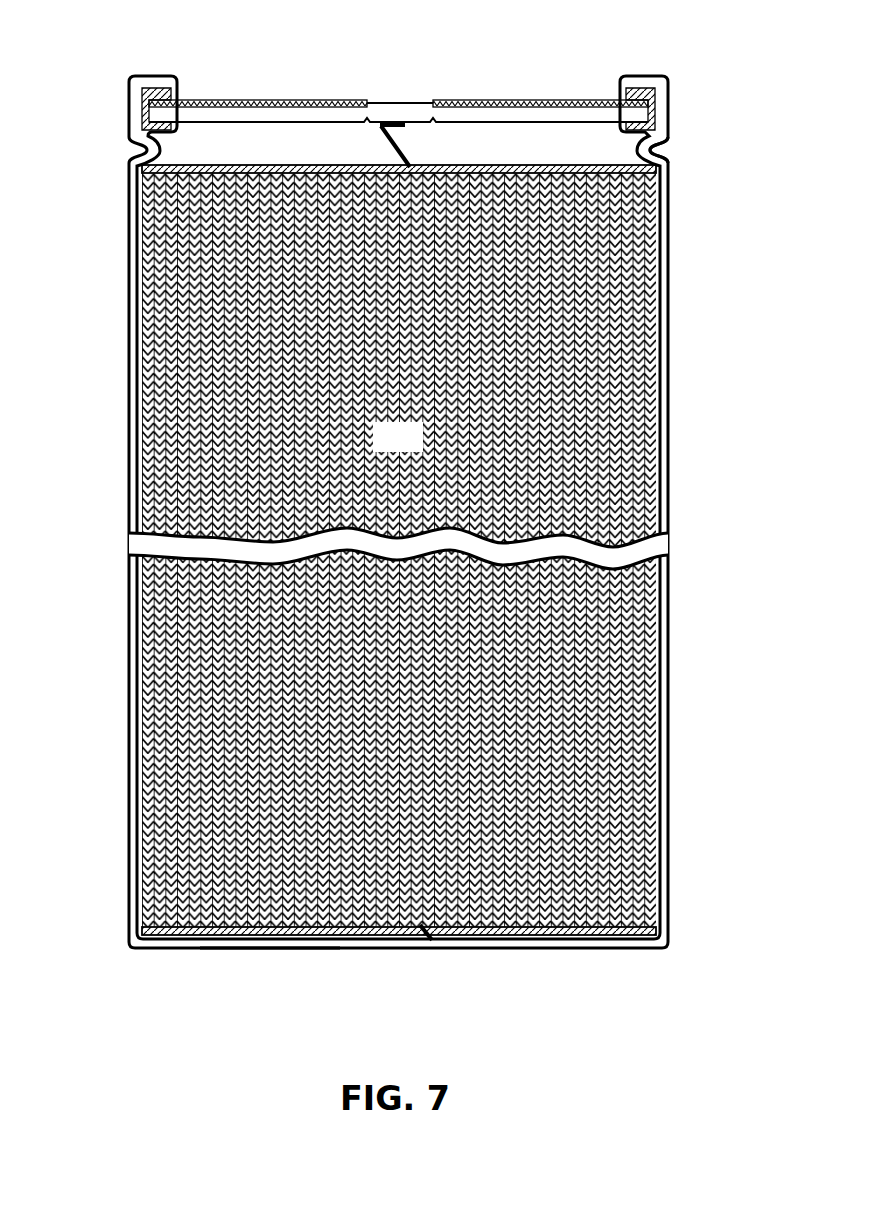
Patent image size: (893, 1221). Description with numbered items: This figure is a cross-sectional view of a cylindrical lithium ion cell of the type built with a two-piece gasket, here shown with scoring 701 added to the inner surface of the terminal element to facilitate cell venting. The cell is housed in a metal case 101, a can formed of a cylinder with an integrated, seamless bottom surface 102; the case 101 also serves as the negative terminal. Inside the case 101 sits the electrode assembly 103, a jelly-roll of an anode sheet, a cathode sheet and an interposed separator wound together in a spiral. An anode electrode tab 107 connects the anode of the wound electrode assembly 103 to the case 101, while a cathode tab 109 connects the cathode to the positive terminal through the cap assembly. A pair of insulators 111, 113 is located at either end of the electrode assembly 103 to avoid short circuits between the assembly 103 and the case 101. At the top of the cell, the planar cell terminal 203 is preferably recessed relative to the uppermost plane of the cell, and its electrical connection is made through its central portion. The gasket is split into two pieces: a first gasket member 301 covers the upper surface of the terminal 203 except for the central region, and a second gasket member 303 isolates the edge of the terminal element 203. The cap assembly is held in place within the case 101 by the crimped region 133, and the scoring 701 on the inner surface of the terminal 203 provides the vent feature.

The case 101 is at (670, 479).
The bottom surface 102 is at (268, 956).
The electrode assembly 103 is at (420, 448).
The anode electrode tab 107 is at (425, 942).
The cathode tab 109 is at (393, 148).
The insulator 111 is at (600, 940).
The insulator 113 is at (150, 191).
The crimped region 133 is at (681, 143).
The cell terminal 203 is at (465, 122).
The first gasket member 301 is at (400, 87).
The second gasket member 303 is at (658, 115).
The scoring 701 is at (433, 107).